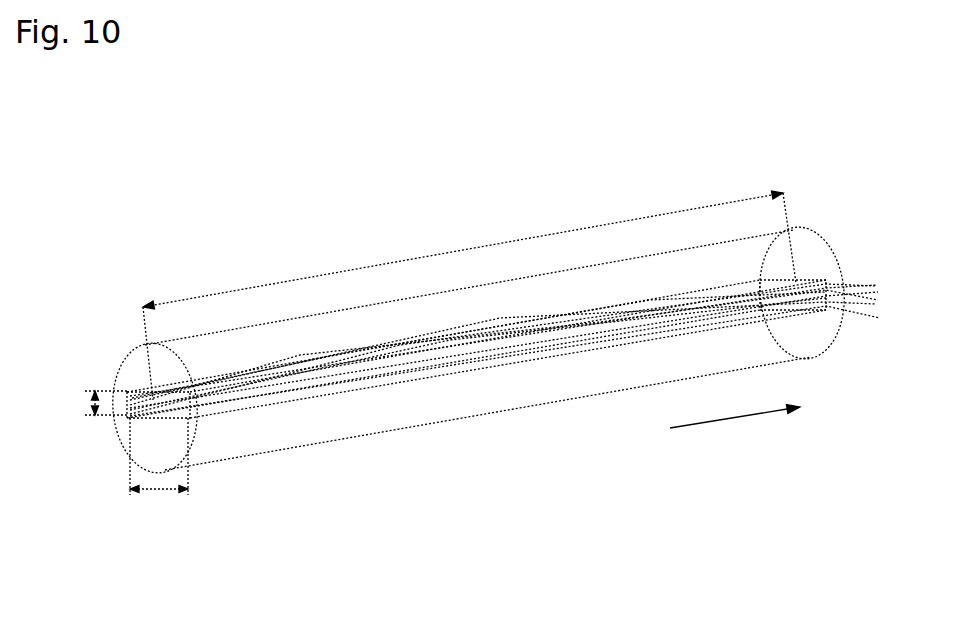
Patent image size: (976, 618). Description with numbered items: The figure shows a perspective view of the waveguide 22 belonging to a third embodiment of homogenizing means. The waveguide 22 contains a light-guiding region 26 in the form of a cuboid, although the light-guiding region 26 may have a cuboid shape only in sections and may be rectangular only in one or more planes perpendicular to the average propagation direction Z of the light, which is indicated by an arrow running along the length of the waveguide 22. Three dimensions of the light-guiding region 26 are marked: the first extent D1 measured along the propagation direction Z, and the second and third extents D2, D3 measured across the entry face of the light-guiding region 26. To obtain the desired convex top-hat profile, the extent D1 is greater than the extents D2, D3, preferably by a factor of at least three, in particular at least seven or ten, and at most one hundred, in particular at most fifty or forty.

The waveguide 22 is at (588, 407).
The light-guiding region 26 is at (173, 412).
The first extent of the light-guiding region D1 is at (365, 267).
The second extent of the light-guiding region D2 is at (92, 404).
The third extent of the light-guiding region D3 is at (155, 489).
The average propagation direction of the light Z is at (723, 420).